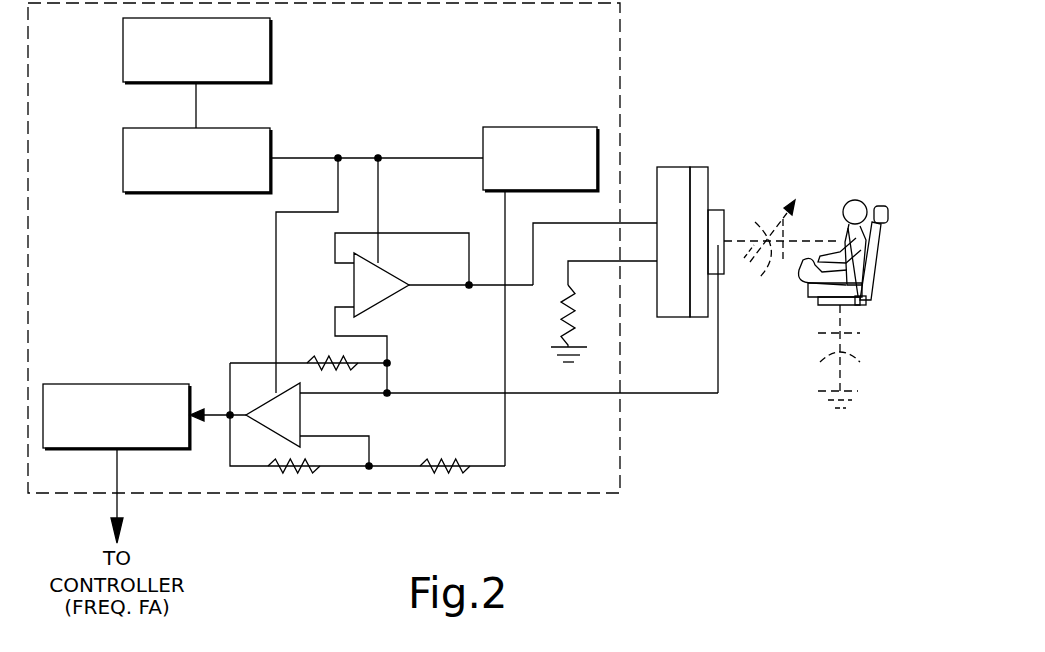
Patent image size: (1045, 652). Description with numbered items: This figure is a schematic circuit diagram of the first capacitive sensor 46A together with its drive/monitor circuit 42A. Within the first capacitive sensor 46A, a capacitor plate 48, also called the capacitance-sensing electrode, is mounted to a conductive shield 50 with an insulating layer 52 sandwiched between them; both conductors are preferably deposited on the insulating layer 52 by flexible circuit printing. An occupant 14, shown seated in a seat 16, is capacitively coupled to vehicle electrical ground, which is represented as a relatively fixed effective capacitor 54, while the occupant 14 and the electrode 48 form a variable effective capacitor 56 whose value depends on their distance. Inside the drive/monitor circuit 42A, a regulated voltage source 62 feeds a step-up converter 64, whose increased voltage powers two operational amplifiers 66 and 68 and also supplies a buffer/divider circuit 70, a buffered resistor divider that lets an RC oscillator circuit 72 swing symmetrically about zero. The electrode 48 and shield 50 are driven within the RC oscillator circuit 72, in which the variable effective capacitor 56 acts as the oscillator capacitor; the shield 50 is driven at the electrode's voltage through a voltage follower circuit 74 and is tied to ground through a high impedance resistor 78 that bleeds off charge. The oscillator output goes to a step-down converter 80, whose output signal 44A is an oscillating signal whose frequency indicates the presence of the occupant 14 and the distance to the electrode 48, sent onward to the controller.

The occupant 14 is at (858, 202).
The seat 16 is at (872, 258).
The drive/monitor circuit 42A is at (417, 493).
The signal 44A is at (117, 505).
The first capacitive sensor 46A is at (765, 221).
The capacitor plate 48 is at (738, 288).
The conductive shield 50 is at (677, 172).
The insulating layer 52 is at (703, 167).
The effective capacitor 54 is at (820, 357).
The variable effective capacitor 56 is at (772, 275).
The regulated voltage source 62 is at (263, 62).
The step-up converter 64 is at (263, 141).
The operational amplifier 66 is at (384, 296).
The operational amplifier 68 is at (301, 414).
The buffer/divider circuit 70 is at (577, 127).
The RC oscillator circuit 72 is at (451, 396).
The voltage follower circuit 74 is at (381, 276).
The high impedance resistor 78 is at (562, 308).
The step-down converter 80 is at (143, 390).